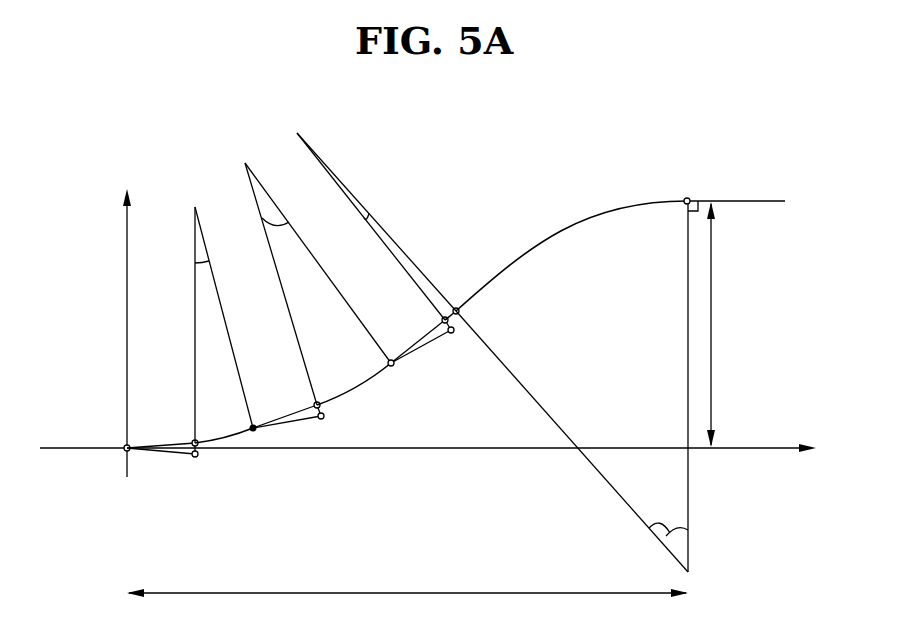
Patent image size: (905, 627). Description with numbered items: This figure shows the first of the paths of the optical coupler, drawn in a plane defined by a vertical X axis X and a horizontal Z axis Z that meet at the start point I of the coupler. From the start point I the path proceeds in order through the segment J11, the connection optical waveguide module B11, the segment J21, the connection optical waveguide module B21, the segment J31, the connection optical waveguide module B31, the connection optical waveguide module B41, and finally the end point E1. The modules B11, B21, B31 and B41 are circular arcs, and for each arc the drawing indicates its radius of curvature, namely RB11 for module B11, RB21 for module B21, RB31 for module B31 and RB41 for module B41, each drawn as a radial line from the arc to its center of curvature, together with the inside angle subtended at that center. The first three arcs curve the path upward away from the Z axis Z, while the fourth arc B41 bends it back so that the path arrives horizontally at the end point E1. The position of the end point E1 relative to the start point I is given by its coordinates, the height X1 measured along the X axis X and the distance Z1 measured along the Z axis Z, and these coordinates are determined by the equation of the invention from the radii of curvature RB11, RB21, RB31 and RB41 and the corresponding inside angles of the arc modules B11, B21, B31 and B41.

The X axis X is at (124, 300).
The Z axis Z is at (445, 450).
The start point I is at (121, 463).
The first connection optical waveguide module (straight section) J11 is at (162, 435).
The connection optical waveguide module (first circular arc) B11 is at (226, 426).
The radius of curvature of arc B11 RB11 is at (198, 325).
The second connection optical waveguide module (straight section) J21 is at (288, 409).
The connection optical waveguide module (second circular arc) B21 is at (354, 392).
The radius of curvature of arc B21 RB21 is at (316, 284).
The third connection optical waveguide module (straight section) J31 is at (417, 337).
The connection optical waveguide module (third circular arc) B31 is at (459, 316).
The radius of curvature of arc B31 RB31 is at (379, 226).
The connection optical waveguide module (fourth circular arc) B41 is at (571, 251).
The radius of curvature of arc B41 RB41 is at (572, 386).
The end point E1 is at (731, 190).
The end point x coordinate X1 is at (726, 324).
The end point z coordinate Z1 is at (407, 597).